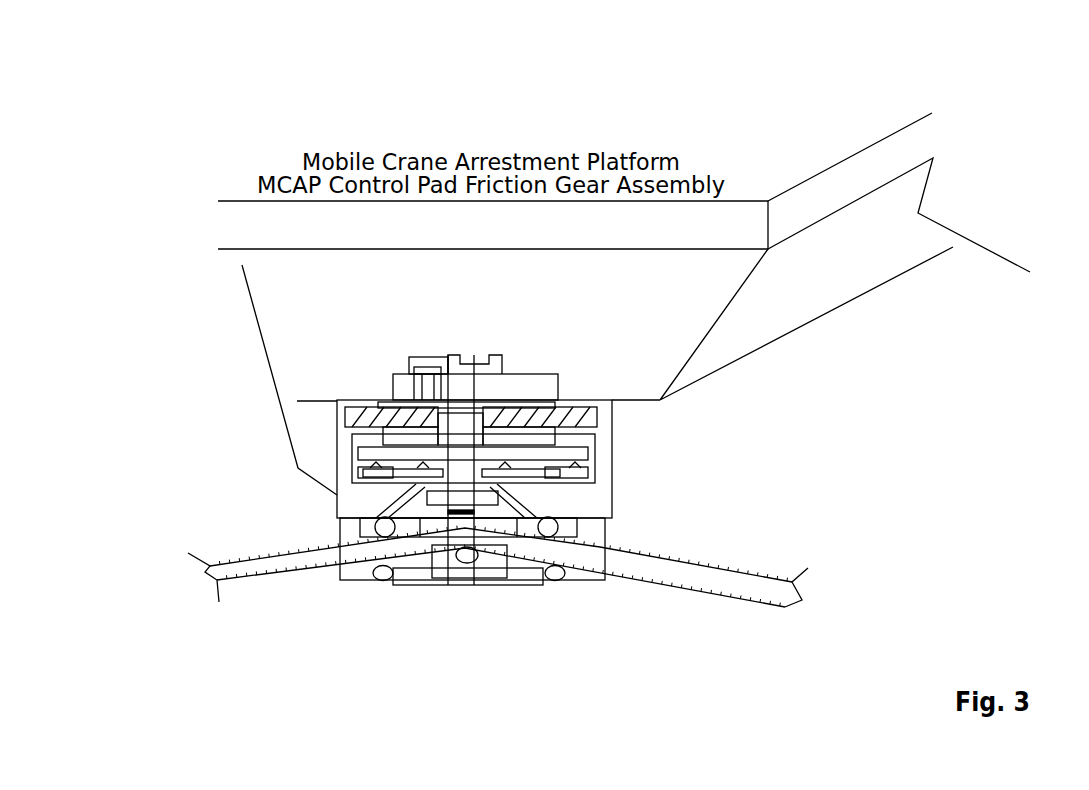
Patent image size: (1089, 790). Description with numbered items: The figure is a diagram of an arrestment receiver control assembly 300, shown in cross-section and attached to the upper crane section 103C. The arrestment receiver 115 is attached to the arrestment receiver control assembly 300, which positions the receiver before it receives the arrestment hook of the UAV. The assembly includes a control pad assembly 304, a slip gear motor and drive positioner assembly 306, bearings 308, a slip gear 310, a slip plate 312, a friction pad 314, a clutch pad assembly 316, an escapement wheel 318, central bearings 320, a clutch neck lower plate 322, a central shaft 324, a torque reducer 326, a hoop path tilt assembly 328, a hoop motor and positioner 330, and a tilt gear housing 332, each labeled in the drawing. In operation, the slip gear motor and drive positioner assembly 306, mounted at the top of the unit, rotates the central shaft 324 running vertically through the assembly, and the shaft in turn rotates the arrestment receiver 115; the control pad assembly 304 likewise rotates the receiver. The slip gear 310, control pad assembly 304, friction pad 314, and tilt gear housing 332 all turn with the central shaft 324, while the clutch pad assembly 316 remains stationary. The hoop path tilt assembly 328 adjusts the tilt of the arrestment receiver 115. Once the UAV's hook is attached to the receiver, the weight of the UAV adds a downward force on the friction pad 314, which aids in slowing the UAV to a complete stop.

The arrestment receiver control assembly 300 is at (721, 124).
The upper crane section 103C is at (860, 175).
The control pad assembly 304 is at (537, 387).
The slip gear motor and drive positioner assembly 306 is at (468, 367).
The bearings 308 is at (297, 401).
The slip gear 310 is at (590, 420).
The slip plate 312 is at (597, 437).
The friction pad 314 is at (402, 433).
The clutch pad assembly 316 is at (338, 498).
The escapement wheel 318 is at (597, 467).
The central bearings 320 is at (487, 503).
The clutch neck lower plate 322 is at (530, 502).
The central shaft 324 is at (462, 457).
The torque reducer 326 is at (358, 472).
The hoop path tilt assembly 328 is at (557, 554).
The hoop motor and positioner 330 is at (467, 555).
The tilt gear housing 332 is at (553, 573).
The arrestment receiver 115 is at (736, 578).